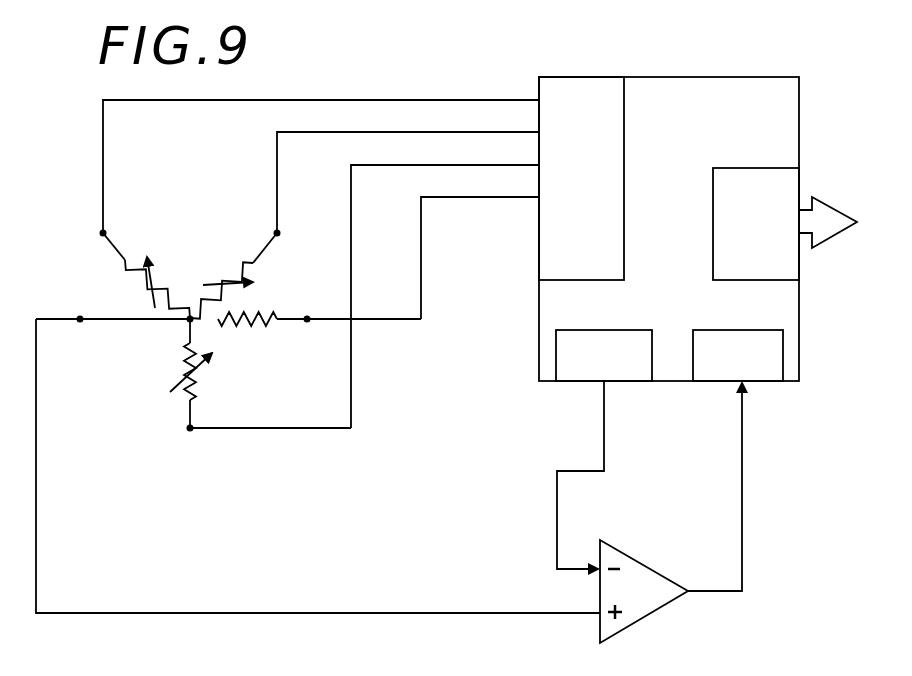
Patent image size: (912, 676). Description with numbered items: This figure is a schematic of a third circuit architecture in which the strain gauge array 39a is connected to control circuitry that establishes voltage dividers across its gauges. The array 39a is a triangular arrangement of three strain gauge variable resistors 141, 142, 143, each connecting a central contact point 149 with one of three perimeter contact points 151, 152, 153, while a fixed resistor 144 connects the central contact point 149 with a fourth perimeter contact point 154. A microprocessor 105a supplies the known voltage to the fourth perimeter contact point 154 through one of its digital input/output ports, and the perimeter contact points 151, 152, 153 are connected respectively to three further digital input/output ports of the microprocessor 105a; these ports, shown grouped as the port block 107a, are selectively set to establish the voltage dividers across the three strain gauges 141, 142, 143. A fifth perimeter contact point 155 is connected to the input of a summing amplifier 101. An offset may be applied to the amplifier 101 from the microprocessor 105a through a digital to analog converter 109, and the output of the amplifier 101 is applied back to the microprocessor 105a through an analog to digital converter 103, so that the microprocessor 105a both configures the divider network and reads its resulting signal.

The strain gauge array 39a is at (138, 375).
The summing amplifier 101 is at (646, 611).
The analog to digital converter 103 is at (749, 330).
The microprocessor 105a is at (758, 77).
The output ports P0-P3 107a is at (597, 77).
The digital to analog converter 109 is at (624, 330).
The strain gauge variable resistor 141 is at (133, 268).
The strain gauge variable resistor 142 is at (236, 266).
The strain gauge variable resistor 143 is at (206, 377).
The fixed resistor 144 is at (263, 314).
The central contact point 149 is at (186, 323).
The perimeter contact point 151 is at (103, 233).
The perimeter contact point 152 is at (277, 233).
The perimeter contact point 153 is at (190, 428).
The fourth perimeter contact point 154 is at (307, 319).
The fifth perimeter contact point 155 is at (80, 319).